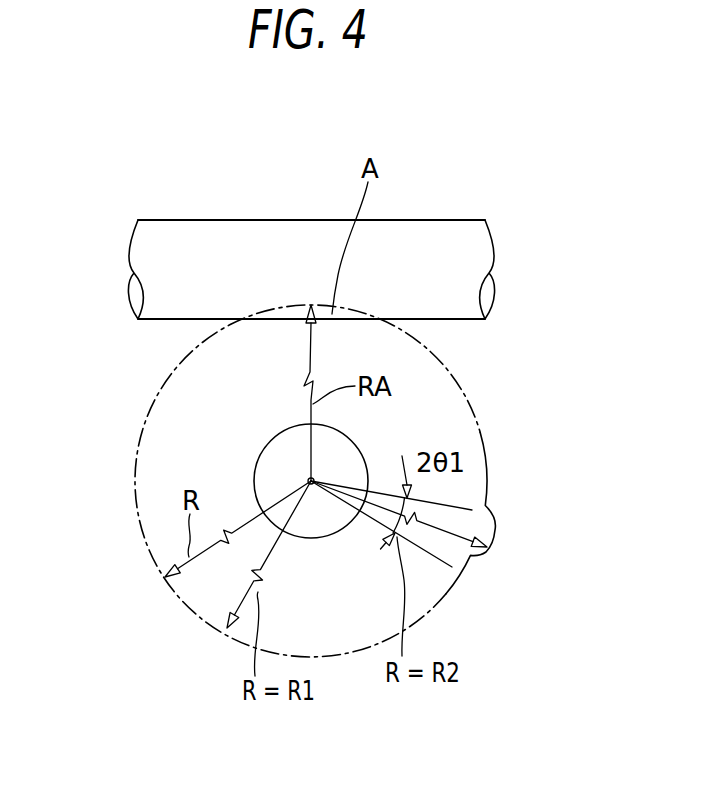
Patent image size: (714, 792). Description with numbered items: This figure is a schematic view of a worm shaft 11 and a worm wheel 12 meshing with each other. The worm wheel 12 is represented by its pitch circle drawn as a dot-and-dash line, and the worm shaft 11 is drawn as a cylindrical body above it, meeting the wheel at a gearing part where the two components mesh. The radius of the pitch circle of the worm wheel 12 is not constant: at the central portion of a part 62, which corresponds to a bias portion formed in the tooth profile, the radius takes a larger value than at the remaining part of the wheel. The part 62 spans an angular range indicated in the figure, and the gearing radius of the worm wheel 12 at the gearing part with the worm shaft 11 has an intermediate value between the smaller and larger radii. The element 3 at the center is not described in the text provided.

The worm shaft 11 is at (441, 206).
The worm wheel 12 is at (125, 529).
The rotation shaft 3 is at (253, 481).
The part corresponding to the bias portion 62 is at (488, 553).